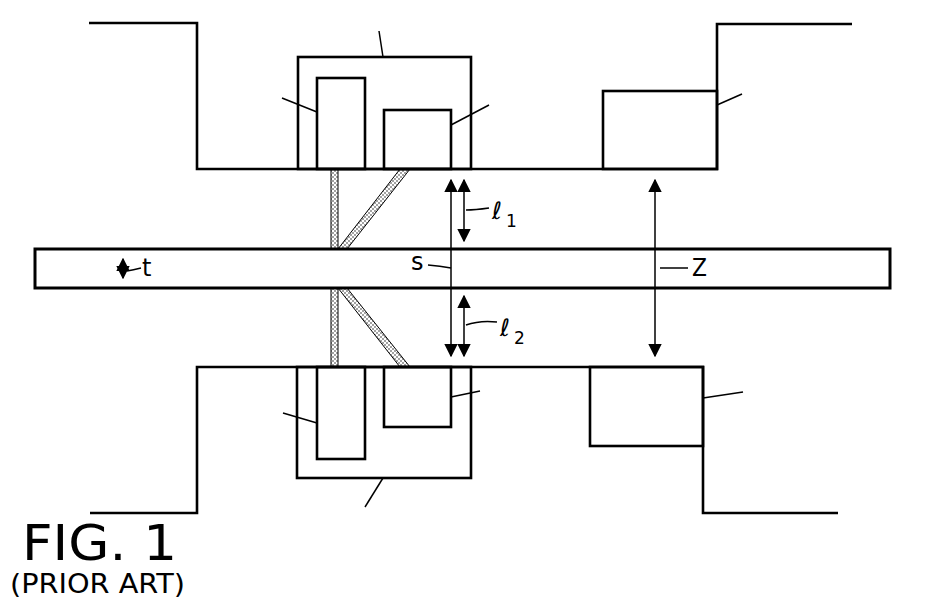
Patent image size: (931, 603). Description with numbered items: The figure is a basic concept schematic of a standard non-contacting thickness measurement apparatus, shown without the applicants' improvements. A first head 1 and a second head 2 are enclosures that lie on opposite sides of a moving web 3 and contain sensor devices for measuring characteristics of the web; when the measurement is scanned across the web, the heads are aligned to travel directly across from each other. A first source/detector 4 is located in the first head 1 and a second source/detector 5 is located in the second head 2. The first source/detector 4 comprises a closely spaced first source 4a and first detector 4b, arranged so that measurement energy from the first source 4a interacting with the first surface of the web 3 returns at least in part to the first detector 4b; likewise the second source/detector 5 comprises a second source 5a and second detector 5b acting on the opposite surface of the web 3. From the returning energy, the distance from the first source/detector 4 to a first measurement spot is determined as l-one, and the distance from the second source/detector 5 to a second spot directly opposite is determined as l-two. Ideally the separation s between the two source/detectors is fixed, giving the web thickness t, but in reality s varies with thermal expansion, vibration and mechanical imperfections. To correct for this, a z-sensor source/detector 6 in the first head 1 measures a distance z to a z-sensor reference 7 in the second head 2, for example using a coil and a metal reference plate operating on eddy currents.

The first head 1 is at (587, 49).
The second head 2 is at (562, 471).
The web 3 is at (763, 263).
The first source/detector 4 is at (430, 96).
The first source 4a is at (359, 133).
The first detector 4b is at (435, 150).
The second source/detector 5 is at (427, 463).
The second source 5a is at (359, 416).
The second detector 5b is at (435, 405).
The z-sensor source/detector 6 is at (664, 140).
The z-sensor reference 7 is at (657, 421).